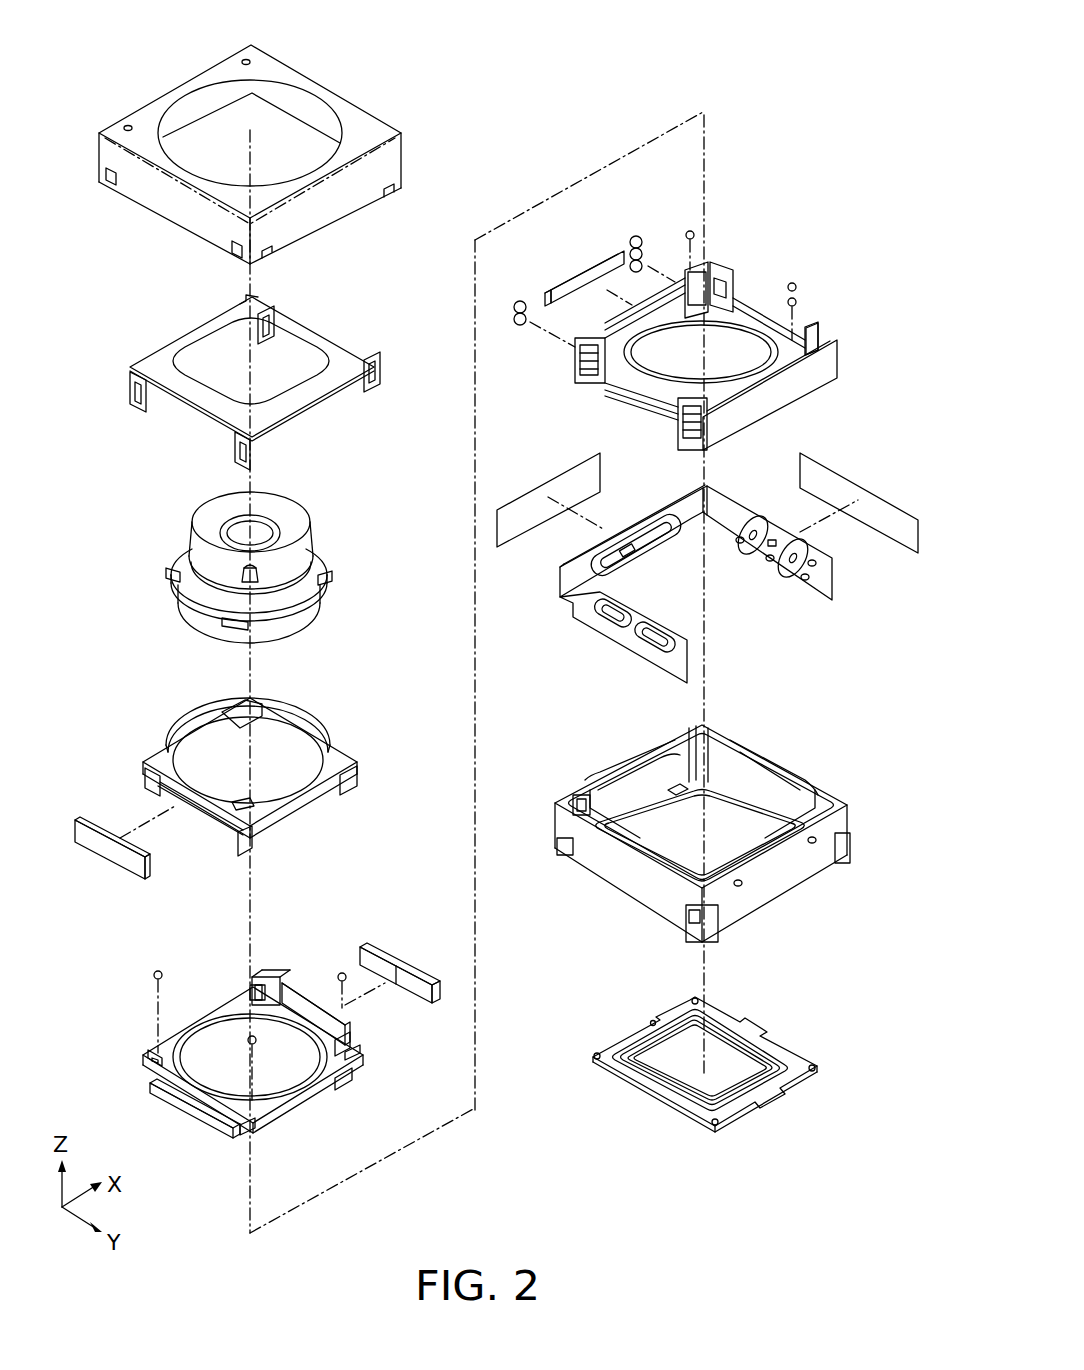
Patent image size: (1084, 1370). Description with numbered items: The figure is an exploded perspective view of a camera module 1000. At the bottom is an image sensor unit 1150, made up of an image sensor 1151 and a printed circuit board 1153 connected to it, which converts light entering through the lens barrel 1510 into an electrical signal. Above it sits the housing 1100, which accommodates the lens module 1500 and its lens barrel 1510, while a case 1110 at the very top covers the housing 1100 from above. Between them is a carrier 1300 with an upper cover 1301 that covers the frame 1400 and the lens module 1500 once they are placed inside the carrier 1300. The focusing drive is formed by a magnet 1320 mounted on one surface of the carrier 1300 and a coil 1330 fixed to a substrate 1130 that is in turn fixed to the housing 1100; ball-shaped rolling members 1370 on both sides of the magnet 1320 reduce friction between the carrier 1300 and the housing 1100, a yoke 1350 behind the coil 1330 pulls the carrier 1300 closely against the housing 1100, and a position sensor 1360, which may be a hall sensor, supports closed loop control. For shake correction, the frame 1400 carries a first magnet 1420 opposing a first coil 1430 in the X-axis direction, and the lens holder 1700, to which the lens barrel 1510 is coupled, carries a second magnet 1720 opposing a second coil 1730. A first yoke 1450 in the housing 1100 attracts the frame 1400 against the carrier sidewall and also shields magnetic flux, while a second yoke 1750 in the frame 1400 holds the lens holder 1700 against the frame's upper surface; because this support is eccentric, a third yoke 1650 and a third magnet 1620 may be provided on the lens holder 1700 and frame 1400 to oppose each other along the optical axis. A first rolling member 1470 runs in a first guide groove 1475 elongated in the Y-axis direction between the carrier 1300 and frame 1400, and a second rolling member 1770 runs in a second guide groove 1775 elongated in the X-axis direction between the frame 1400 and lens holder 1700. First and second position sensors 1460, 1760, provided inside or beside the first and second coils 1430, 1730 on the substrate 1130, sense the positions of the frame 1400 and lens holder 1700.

The camera module 1000 is at (125, 27).
The case 1110 is at (380, 62).
The upper cover 1301 is at (342, 320).
The lens module 1500 is at (236, 543).
The lens barrel 1510 is at (193, 520).
The lens holder 1700 is at (252, 904).
The second guide groove 1775 is at (150, 782).
The second magnet 1720 is at (92, 838).
The third magnet 1620 is at (345, 796).
The second rolling member 1770 is at (342, 970).
The first guide groove 1475 is at (258, 972).
The first magnet 1420 is at (418, 965).
The frame 1400 is at (464, 669).
The second yoke 1750 is at (190, 1098).
The third yoke 1650 is at (345, 1085).
The carrier 1300 is at (862, 358).
The magnet 1320 is at (592, 270).
The rolling member 1370 is at (638, 236).
The first rolling member 1470 is at (694, 230).
The yoke 1350 is at (560, 482).
The first yoke 1450 is at (888, 522).
The substrate 1130 is at (658, 580).
The coil 1330 is at (652, 522).
The position sensor 1360 is at (633, 553).
The second coil 1730 is at (612, 625).
The second position sensor 1760 is at (651, 648).
The first coil 1430 is at (790, 565).
The first position sensor 1460 is at (748, 545).
The housing 1100 is at (600, 910).
The image sensor unit 1150 is at (756, 1034).
The image sensor 1151 is at (718, 1048).
The printed circuit board 1153 is at (783, 1054).